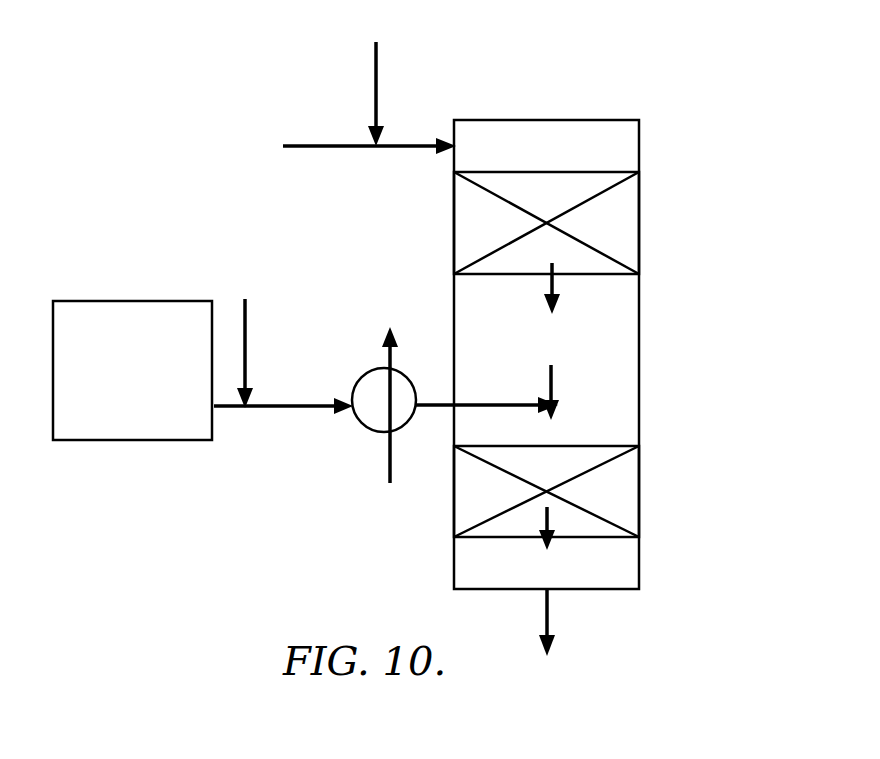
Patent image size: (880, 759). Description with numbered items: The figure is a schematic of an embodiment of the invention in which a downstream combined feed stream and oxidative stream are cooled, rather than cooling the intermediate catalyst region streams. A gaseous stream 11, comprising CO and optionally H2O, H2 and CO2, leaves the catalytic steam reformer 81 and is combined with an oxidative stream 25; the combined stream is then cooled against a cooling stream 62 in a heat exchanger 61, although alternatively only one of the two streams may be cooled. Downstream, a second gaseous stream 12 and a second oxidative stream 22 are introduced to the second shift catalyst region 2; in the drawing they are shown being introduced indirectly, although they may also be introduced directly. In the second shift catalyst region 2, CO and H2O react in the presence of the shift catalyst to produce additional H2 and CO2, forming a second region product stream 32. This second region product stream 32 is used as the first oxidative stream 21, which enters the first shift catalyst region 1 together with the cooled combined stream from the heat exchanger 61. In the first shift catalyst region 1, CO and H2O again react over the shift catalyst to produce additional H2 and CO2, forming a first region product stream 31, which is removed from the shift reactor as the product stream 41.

The first shift catalyst region 1 is at (613, 485).
The second shift catalyst region 2 is at (632, 237).
The gaseous stream 11 is at (295, 410).
The second gaseous stream 12 is at (337, 147).
The first oxidative stream 21 is at (556, 377).
The second oxidative stream 22 is at (376, 92).
The oxidative stream 25 is at (245, 368).
The first region product stream 31 is at (550, 527).
The second region product stream 32 is at (555, 286).
The product stream 41 is at (548, 623).
The heat exchanger 61 is at (360, 418).
The cooling stream 62 is at (385, 445).
The catalytic steam reformer 81 is at (147, 392).